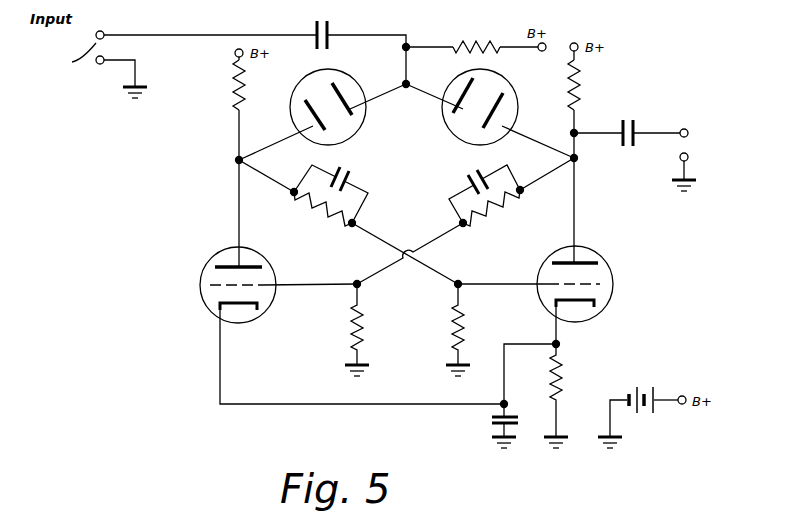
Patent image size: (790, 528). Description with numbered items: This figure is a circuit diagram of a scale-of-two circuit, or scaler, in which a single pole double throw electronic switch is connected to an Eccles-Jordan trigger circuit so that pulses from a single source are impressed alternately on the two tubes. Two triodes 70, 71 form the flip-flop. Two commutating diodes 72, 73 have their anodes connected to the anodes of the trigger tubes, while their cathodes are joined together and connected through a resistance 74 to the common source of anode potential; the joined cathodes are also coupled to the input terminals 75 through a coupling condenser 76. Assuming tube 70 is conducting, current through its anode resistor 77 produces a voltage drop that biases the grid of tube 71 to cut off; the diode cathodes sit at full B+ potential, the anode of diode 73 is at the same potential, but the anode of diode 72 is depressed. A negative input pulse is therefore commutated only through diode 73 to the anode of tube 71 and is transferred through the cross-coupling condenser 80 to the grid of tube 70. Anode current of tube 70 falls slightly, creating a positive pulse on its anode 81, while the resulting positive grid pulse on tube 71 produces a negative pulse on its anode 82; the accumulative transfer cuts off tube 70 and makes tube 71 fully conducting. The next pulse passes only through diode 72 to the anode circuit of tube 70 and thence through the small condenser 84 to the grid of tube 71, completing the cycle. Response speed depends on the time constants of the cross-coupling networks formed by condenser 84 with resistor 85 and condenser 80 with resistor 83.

The triode 70 is at (257, 275).
The triode 71 is at (556, 276).
The commutating diode 72 is at (312, 80).
The commutating diode 73 is at (506, 80).
The resistance 74 is at (488, 36).
The input terminals 75 is at (95, 64).
The coupling condenser 76 is at (312, 27).
The anode resistor 77 is at (233, 91).
The cross-coupling condenser 80 is at (470, 172).
The anode 81 is at (222, 264).
The anode 82 is at (582, 263).
The resistor 83 is at (486, 222).
The small condenser 84 is at (348, 173).
The resistor 85 is at (318, 214).